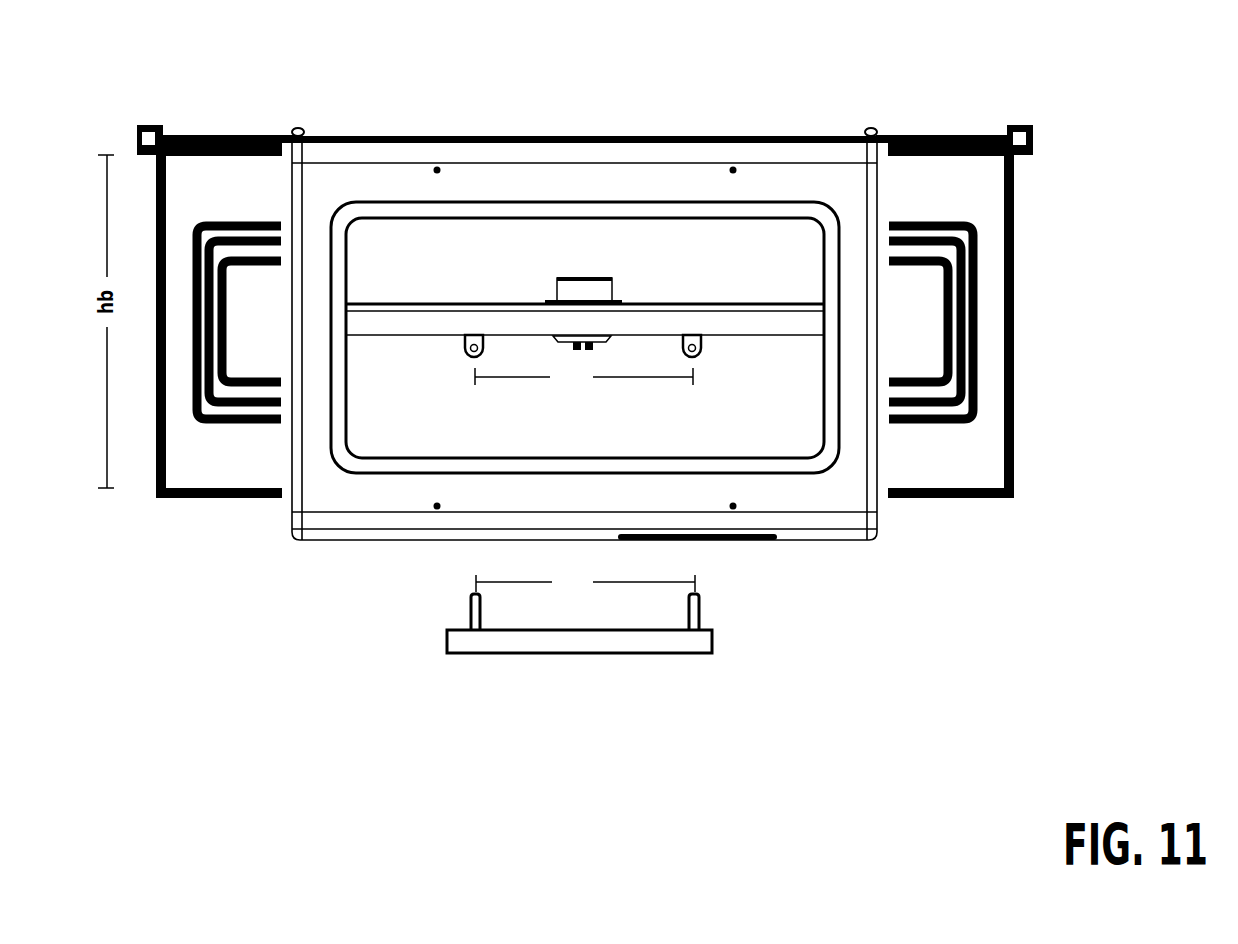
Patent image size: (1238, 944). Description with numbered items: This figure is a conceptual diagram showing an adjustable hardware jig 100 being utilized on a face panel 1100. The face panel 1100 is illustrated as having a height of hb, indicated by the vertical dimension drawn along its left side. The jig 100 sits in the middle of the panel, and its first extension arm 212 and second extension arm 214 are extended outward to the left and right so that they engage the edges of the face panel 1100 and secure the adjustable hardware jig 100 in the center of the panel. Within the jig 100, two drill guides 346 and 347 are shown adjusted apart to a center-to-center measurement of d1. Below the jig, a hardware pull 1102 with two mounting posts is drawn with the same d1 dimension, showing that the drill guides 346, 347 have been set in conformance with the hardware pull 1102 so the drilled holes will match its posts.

The adjustable hardware jig 100 is at (502, 148).
The first extension arm 212 is at (202, 133).
The second extension arm 214 is at (928, 133).
The drill guide 346 is at (468, 358).
The drill guide 347 is at (704, 350).
The face panel 1100 is at (1012, 375).
The hardware pull 1102 is at (712, 636).